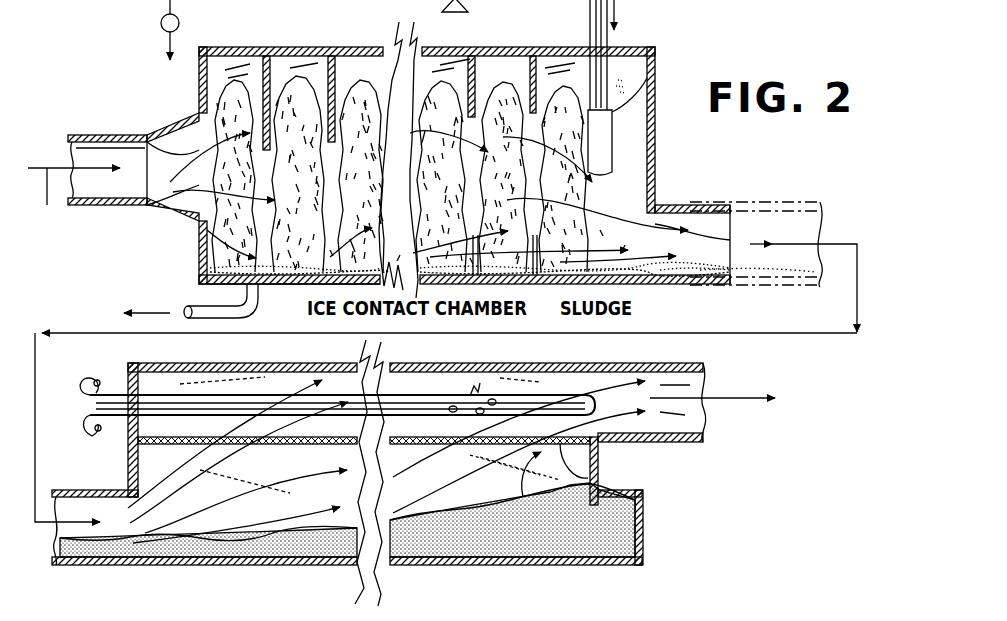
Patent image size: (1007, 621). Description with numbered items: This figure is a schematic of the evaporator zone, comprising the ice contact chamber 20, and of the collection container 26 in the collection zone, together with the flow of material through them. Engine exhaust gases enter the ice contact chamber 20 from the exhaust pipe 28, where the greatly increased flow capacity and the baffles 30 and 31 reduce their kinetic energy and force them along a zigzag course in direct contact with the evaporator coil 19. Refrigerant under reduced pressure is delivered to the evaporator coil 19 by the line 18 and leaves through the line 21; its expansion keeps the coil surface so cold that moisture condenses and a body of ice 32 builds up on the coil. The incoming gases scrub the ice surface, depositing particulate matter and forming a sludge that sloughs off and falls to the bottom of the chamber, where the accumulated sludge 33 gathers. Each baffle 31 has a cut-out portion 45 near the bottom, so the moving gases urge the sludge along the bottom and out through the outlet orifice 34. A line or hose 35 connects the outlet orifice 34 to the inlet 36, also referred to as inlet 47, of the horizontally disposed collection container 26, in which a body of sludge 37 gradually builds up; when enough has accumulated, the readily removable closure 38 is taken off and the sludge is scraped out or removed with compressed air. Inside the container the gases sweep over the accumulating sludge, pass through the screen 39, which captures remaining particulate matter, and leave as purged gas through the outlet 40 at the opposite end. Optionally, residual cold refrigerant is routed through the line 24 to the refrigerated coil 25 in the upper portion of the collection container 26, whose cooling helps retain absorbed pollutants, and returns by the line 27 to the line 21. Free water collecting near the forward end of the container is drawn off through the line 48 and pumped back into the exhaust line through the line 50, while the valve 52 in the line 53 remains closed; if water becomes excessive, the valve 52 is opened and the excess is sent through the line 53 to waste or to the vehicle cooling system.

The line 18 is at (590, 26).
The evaporator coil 19 is at (649, 78).
The ice contact chamber 20 is at (476, 42).
The line 21 is at (197, 304).
The line 24 is at (92, 420).
The refrigerated coil 25 is at (540, 398).
The collection container 26 is at (346, 568).
The line 27 is at (90, 386).
The exhaust pipe 28 is at (102, 135).
The baffles 30 is at (280, 58).
The baffles 31 is at (512, 242).
The body of ice 32 is at (233, 70).
The accumulated sludge 33 is at (680, 276).
The outlet orifice 34 is at (706, 230).
The line or hose 35 is at (768, 204).
The inlet 36 is at (57, 530).
The body of sludge 37 is at (597, 492).
The removable closure 38 is at (640, 493).
The screen 39 is at (442, 445).
The outlet 40 is at (690, 425).
The cut-out portion 45 is at (287, 286).
The inlet 47 is at (132, 503).
The line 48 is at (385, 0).
The line 50 is at (104, 3).
The valve 52 is at (161, 27).
The line 53 is at (170, 45).